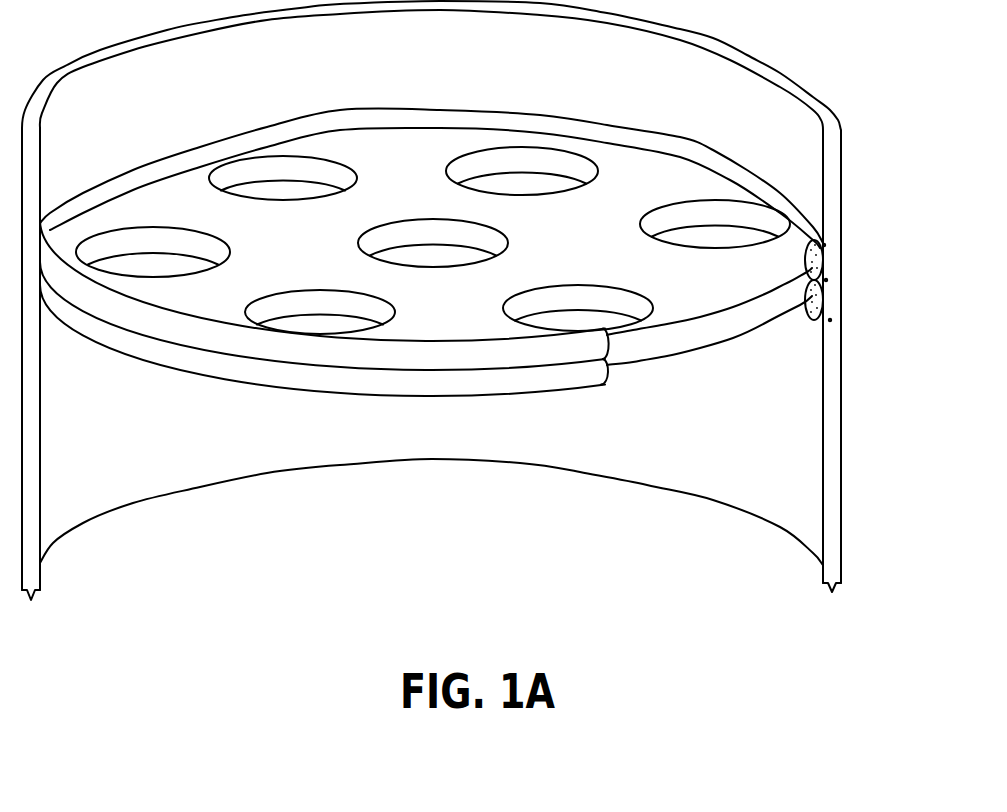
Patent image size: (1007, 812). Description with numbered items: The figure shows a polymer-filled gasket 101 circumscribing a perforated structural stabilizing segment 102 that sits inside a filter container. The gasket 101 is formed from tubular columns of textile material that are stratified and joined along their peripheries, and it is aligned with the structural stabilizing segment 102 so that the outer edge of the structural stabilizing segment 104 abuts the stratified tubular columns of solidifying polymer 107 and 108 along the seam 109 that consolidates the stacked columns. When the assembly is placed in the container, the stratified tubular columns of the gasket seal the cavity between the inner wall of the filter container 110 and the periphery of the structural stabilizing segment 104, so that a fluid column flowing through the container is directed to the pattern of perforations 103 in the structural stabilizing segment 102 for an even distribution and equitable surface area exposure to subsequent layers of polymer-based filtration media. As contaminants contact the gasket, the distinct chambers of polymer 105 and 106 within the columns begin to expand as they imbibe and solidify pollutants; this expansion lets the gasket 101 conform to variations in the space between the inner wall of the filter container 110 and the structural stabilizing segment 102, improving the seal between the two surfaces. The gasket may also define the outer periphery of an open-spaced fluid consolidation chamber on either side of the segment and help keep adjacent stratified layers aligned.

The gasket 101 is at (260, 373).
The structural stabilizing segment 102 is at (334, 238).
The pattern of perforations 103 is at (647, 303).
The outer edge of the structural stabilizing segment 104 is at (727, 328).
The distinct chamber of polymer 105 is at (817, 259).
The distinct chamber of polymer 106 is at (822, 304).
The stratified tubular column of solidifying polymer 107 is at (824, 245).
The stratified tubular column of solidifying polymer 108 is at (830, 320).
The seam 109 is at (826, 280).
The inner wall of the filter container 110 is at (712, 480).